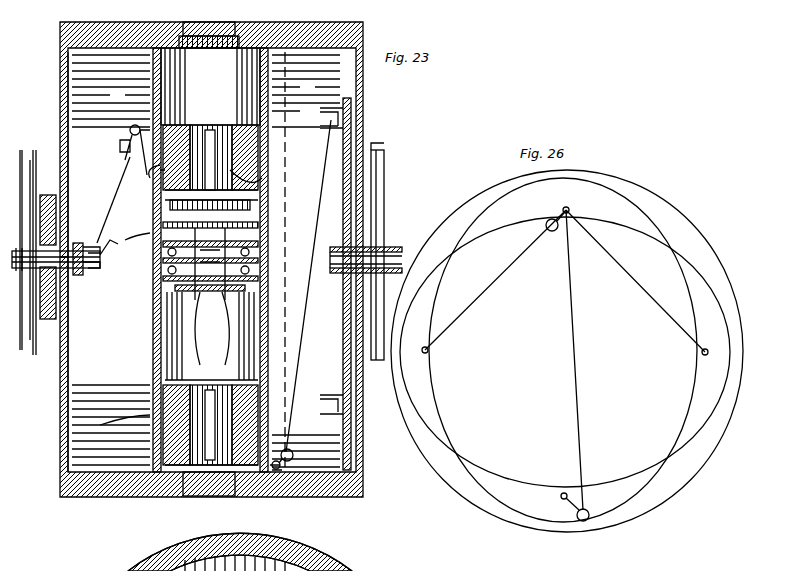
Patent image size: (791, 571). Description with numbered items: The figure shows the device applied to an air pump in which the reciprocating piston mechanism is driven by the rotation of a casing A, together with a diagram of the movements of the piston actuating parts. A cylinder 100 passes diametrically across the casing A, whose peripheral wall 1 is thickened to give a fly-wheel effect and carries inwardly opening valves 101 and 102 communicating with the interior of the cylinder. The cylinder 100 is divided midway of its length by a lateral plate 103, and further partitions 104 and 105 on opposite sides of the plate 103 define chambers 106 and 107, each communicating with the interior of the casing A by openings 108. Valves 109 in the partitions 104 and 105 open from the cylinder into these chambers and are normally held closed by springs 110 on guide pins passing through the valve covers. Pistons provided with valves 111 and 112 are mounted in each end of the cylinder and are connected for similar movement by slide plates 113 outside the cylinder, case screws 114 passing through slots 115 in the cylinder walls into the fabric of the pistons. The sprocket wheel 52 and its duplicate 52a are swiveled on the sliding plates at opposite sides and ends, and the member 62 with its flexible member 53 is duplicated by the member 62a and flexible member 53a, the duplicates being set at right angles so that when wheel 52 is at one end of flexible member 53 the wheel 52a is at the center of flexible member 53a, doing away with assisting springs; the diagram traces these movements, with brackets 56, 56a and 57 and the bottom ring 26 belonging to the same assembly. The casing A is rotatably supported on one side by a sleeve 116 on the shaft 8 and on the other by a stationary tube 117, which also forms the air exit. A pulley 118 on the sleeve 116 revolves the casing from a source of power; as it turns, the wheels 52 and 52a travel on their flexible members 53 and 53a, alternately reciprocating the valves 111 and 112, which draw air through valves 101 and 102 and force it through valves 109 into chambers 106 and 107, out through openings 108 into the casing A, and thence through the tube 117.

In FIG. 23, the peripheral wall 1 is at (364, 40).
In FIG. 23, the shaft 8 is at (70, 274).
In FIG. 23, the ring casing 26 is at (262, 515).
In FIG. 23, the sprocket wheel 52 is at (317, 497).
In FIG. 26, the sprocket wheel 52 is at (589, 504).
In FIG. 23, the duplicate sprocket wheel 52a is at (125, 150).
In FIG. 26, the duplicate sprocket wheel 52a is at (551, 232).
In FIG. 23, the flexible member 53 is at (321, 186).
In FIG. 26, the flexible member 53 is at (586, 407).
In FIG. 23, the duplicate flexible member 53a is at (153, 206).
In FIG. 26, the duplicate flexible member 53a is at (470, 300).
In FIG. 23, the bracket 56 is at (320, 110).
In FIG. 23, the bracket 56a is at (94, 252).
In FIG. 23, the bracket 57 is at (335, 394).
In FIG. 23, the member 62 is at (343, 305).
In FIG. 23, the duplicate member 62a is at (150, 257).
In FIG. 23, the cylinder 100 is at (210, 86).
In FIG. 23, the inwardly opening valve 101 is at (217, 36).
In FIG. 23, the inwardly opening valve 102 is at (213, 480).
In FIG. 23, the lateral plate 103 is at (272, 258).
In FIG. 23, the partition 104 is at (272, 222).
In FIG. 23, the partition 105 is at (272, 280).
In FIG. 23, the chamber 106 is at (150, 235).
In FIG. 23, the chamber 107 is at (152, 272).
In FIG. 23, the openings 108 is at (272, 246).
In FIG. 23, the valve 109 is at (217, 296).
In FIG. 23, the spring 110 is at (243, 300).
In FIG. 23, the piston valve 111 is at (210, 150).
In FIG. 23, the piston valve 112 is at (162, 488).
In FIG. 23, the slide plate 113 is at (152, 323).
In FIG. 23, the case screw 114 is at (150, 176).
In FIG. 23, the slot 115 is at (152, 360).
In FIG. 23, the sleeve 116 is at (118, 244).
In FIG. 23, the stationary tube 117 is at (392, 250).
In FIG. 26, the stationary tube 117 is at (567, 351).
In FIG. 23, the pulley 118 is at (42, 326).
In FIG. 23, the casing A is at (206, 261).